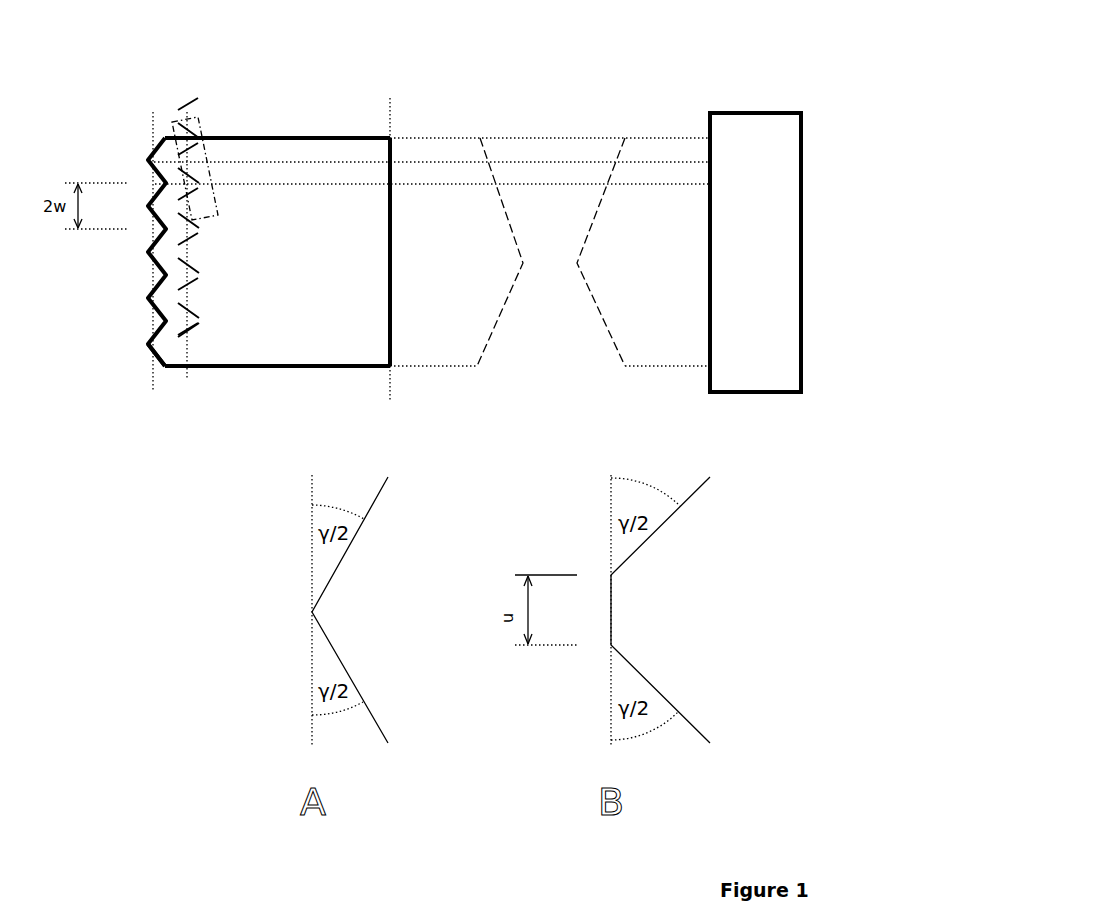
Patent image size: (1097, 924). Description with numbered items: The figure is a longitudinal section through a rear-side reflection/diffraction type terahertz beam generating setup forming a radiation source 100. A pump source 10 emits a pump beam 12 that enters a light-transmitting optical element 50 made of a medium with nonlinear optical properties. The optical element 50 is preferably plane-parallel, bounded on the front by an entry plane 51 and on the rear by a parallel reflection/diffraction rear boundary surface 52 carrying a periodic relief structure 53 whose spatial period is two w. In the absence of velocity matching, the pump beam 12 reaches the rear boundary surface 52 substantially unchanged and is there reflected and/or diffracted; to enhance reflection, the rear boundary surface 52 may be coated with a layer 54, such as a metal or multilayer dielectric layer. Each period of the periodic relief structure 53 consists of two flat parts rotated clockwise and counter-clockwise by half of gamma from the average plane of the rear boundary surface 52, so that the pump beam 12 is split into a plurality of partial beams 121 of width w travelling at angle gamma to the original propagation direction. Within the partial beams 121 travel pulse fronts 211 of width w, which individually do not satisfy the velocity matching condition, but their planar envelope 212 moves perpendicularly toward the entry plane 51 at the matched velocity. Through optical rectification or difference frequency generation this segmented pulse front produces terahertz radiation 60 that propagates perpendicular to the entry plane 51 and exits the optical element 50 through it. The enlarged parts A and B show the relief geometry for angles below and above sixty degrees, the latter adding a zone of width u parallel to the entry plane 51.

The pump source 10 is at (772, 113).
The radiation source 100 is at (832, 255).
The pump beam 12 is at (622, 138).
The terahertz radiation 60 is at (480, 138).
The optical element 50 is at (327, 137).
The entry plane 51 is at (390, 380).
The rear boundary surface 52 is at (153, 125).
The periodic relief structure 53 is at (188, 345).
The layer 54 is at (153, 348).
The partial beams 121 is at (195, 100).
The pulse fronts 211 is at (185, 130).
The envelope 212 is at (153, 346).